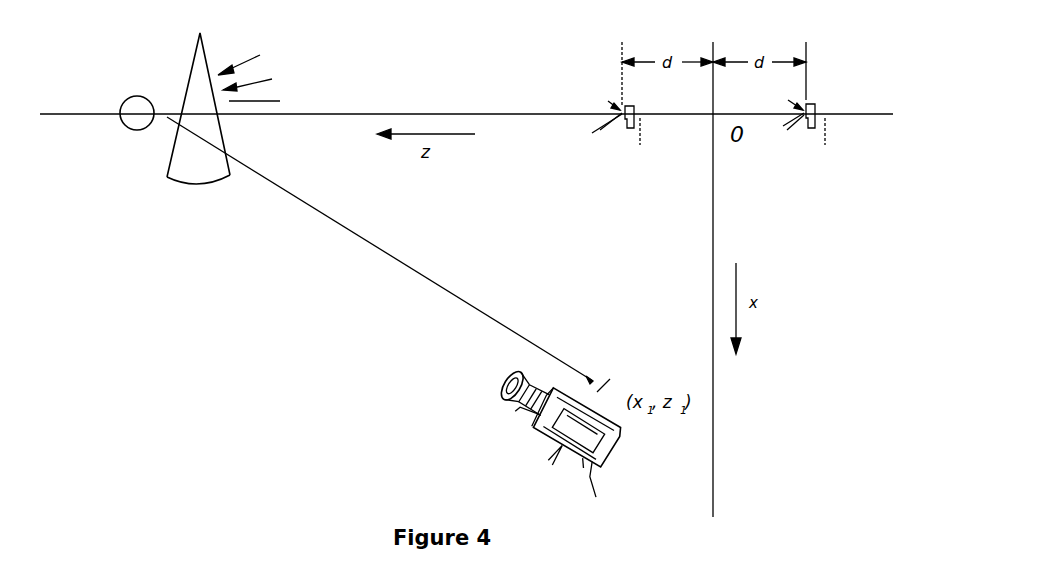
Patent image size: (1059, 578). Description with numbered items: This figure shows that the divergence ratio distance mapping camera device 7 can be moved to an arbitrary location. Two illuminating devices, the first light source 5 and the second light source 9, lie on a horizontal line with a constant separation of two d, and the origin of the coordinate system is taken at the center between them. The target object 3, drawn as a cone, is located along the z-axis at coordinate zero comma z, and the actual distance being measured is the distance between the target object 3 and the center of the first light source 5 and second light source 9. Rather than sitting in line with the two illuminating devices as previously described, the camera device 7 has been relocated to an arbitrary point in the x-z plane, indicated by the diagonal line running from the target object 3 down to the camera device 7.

The target object 3 is at (184, 53).
The first light source 5 is at (598, 103).
The second light source 9 is at (818, 70).
The camera device 7 is at (512, 430).